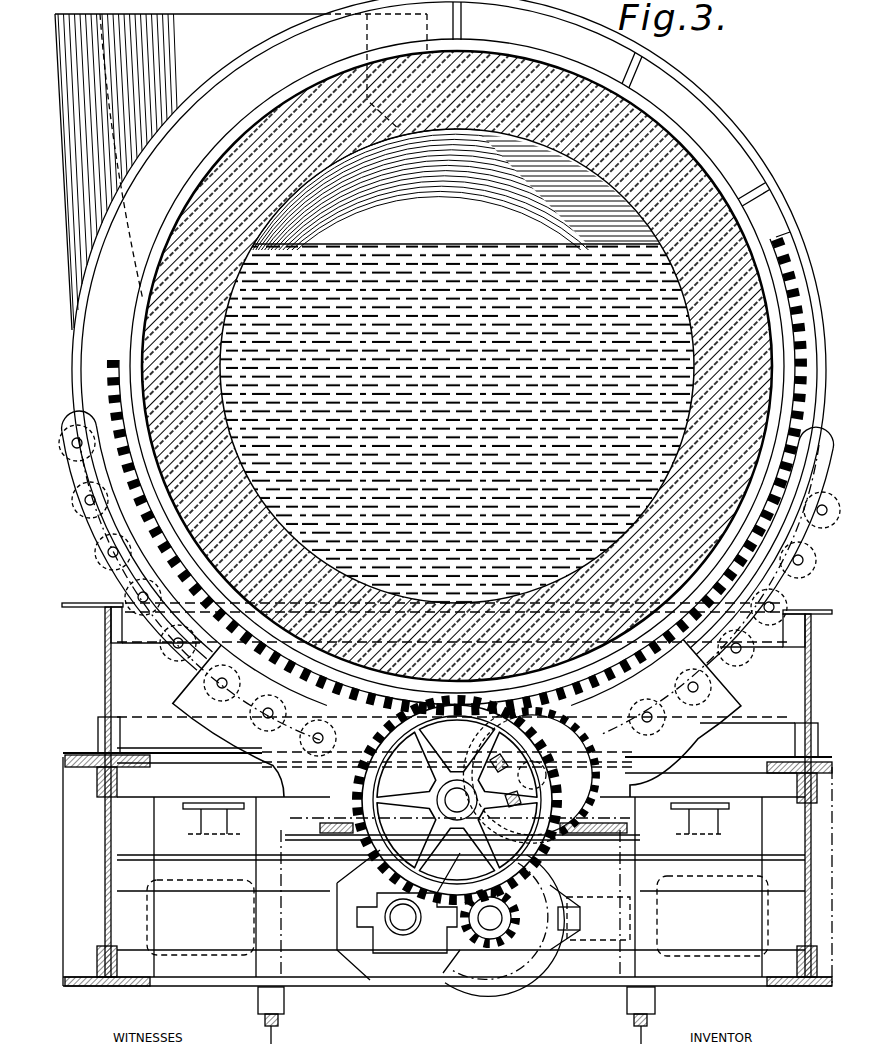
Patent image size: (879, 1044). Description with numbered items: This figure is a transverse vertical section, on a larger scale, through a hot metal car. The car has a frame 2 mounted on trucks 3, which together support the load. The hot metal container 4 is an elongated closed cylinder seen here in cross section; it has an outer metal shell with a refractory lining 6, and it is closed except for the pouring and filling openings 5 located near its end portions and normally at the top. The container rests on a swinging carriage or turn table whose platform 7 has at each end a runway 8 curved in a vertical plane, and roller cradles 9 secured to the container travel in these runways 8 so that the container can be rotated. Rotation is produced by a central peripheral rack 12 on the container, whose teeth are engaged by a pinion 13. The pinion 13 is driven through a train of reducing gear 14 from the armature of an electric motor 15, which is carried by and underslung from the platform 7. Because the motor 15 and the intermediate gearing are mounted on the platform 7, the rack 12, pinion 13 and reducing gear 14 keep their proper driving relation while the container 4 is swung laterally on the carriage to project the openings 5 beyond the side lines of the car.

The frame 2 is at (105, 698).
The trucks 3 is at (258, 995).
The hot metal container 4 is at (673, 173).
The pouring and filling openings 5 is at (241, 172).
The refractory lining 6 is at (730, 147).
The platform 7 is at (338, 823).
The runway 8 is at (180, 697).
The roller cradles 9 is at (108, 565).
The central peripheral rack 12 is at (783, 258).
The pinion 13 is at (573, 817).
The train of reducing gear 14 is at (548, 856).
The electric motor 15 is at (410, 975).